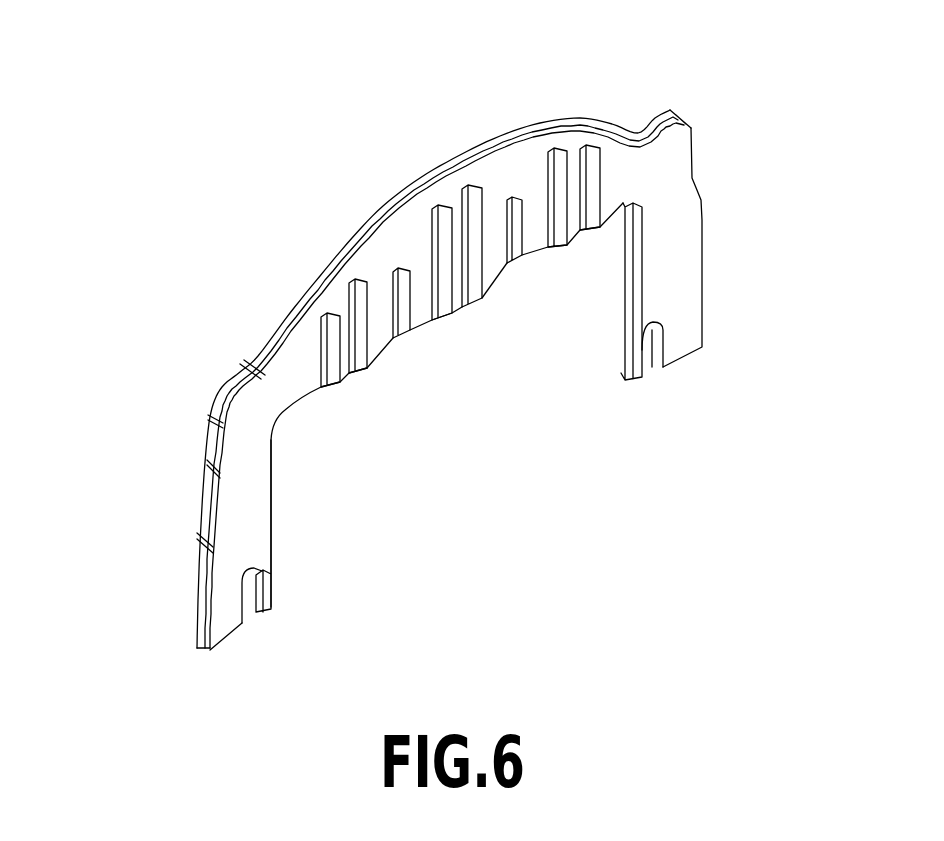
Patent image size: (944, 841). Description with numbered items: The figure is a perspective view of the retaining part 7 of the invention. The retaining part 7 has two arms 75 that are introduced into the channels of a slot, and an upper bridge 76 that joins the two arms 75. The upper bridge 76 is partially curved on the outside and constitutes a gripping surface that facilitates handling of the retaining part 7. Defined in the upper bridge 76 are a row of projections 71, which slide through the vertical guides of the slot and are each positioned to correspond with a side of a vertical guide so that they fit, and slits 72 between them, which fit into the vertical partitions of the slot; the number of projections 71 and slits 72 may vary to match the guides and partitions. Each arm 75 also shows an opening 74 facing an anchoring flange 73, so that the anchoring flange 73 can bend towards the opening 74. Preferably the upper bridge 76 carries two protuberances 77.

The retaining part 7 is at (182, 261).
The projections 71 is at (362, 287).
The slits 72 is at (508, 265).
The anchoring flange 73 is at (625, 380).
The opening 74 is at (650, 377).
The arms 75 is at (677, 300).
The upper bridge 76 is at (410, 192).
The protuberances 77 is at (681, 138).